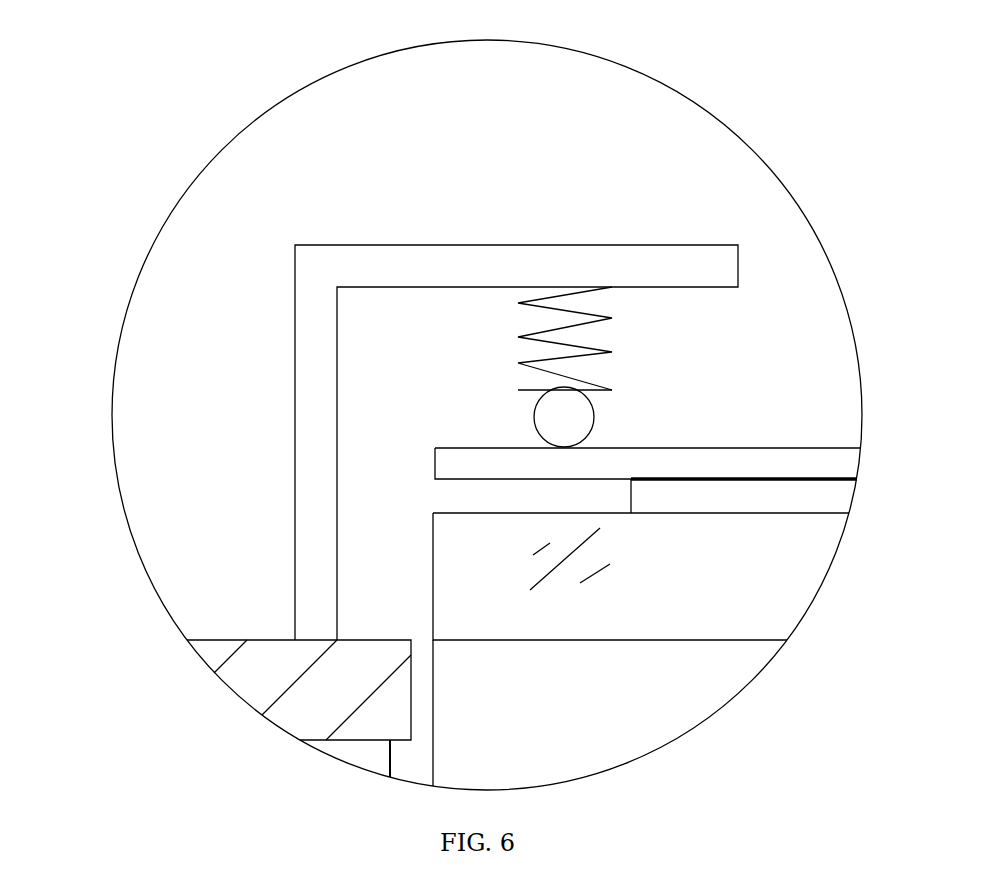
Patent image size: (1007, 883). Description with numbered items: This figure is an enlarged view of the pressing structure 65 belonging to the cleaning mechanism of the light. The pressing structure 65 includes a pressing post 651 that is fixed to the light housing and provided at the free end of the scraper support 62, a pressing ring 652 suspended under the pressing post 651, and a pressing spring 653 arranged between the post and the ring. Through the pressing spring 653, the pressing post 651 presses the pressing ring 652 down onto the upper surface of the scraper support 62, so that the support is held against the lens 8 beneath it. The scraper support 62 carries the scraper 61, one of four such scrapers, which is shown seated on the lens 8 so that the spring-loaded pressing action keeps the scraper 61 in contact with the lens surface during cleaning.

The pressing structure 65 is at (378, 170).
The pressing post 651 is at (315, 338).
The pressing ring 652 is at (597, 413).
The pressing spring 653 is at (605, 313).
The scraper support 62 is at (777, 462).
The scraper 61 is at (770, 568).
The lens 8 is at (612, 690).